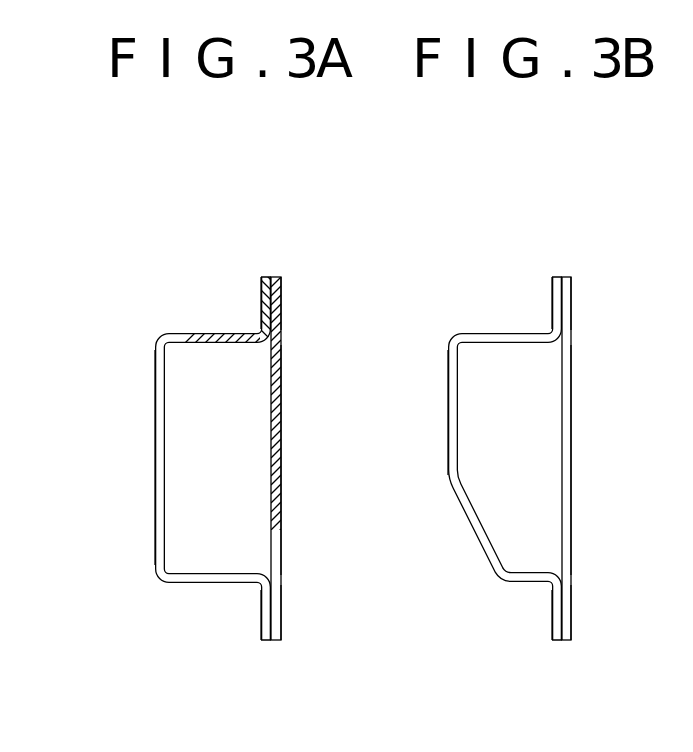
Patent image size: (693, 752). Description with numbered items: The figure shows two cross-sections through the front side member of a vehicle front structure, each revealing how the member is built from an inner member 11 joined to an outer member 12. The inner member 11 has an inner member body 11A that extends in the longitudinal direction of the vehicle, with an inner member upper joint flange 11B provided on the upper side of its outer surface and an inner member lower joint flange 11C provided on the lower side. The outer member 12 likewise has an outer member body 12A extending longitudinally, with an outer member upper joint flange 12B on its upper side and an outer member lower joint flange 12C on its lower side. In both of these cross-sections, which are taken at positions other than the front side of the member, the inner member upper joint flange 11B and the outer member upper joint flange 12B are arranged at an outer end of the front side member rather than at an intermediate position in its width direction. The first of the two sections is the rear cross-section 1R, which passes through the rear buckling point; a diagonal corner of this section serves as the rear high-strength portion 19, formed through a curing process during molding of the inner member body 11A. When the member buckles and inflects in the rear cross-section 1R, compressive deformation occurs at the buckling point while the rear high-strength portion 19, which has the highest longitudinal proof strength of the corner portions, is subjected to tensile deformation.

In FIG. 3A, the rear cross-section 1R is at (222, 257).
In FIG. 3A, the inner member 11 is at (196, 312).
In FIG. 3B, the inner member 11 is at (507, 310).
In FIG. 3A, the inner member body 11A is at (155, 520).
In FIG. 3B, the inner member body 11A is at (448, 440).
In FIG. 3A, the inner member upper joint flange 11B is at (261, 300).
In FIG. 3B, the inner member upper joint flange 11B is at (552, 305).
In FIG. 3A, the inner member lower joint flange 11C is at (261, 612).
In FIG. 3B, the inner member lower joint flange 11C is at (552, 612).
In FIG. 3A, the outer member 12 is at (300, 277).
In FIG. 3B, the outer member 12 is at (590, 277).
In FIG. 3A, the outer member body 12A is at (281, 520).
In FIG. 3B, the outer member body 12A is at (571, 520).
In FIG. 3A, the outer member upper joint flange 12B is at (281, 311).
In FIG. 3B, the outer member upper joint flange 12B is at (571, 312).
In FIG. 3A, the outer member lower joint flange 12C is at (281, 607).
In FIG. 3B, the outer member lower joint flange 12C is at (562, 607).
In FIG. 3A, the rear high-strength portion 19 is at (281, 398).